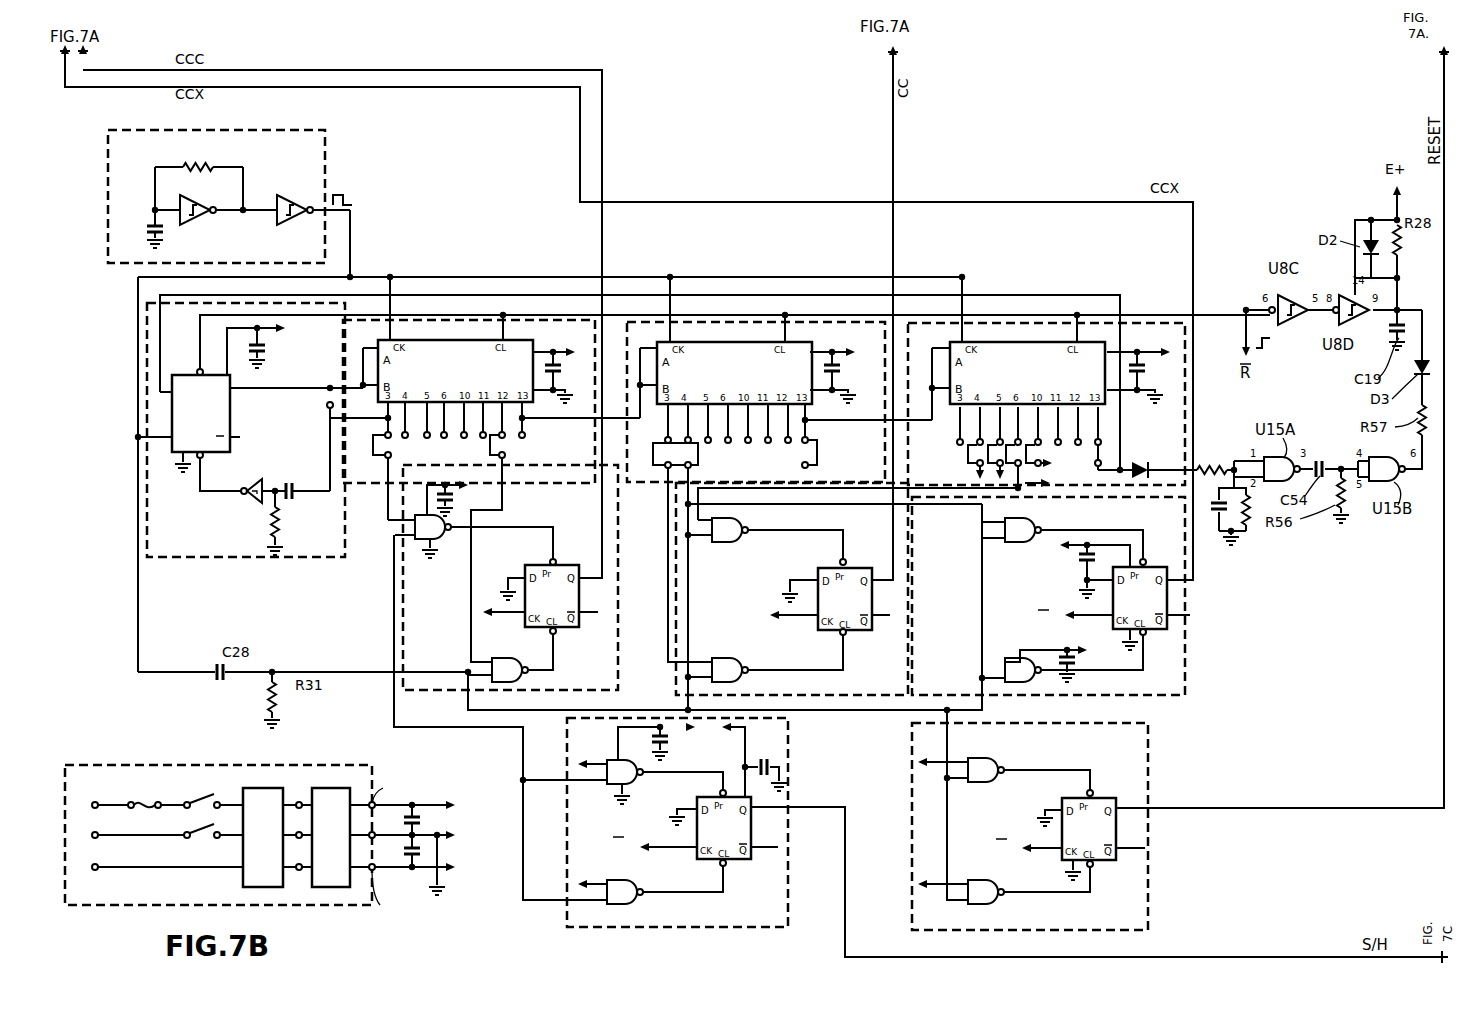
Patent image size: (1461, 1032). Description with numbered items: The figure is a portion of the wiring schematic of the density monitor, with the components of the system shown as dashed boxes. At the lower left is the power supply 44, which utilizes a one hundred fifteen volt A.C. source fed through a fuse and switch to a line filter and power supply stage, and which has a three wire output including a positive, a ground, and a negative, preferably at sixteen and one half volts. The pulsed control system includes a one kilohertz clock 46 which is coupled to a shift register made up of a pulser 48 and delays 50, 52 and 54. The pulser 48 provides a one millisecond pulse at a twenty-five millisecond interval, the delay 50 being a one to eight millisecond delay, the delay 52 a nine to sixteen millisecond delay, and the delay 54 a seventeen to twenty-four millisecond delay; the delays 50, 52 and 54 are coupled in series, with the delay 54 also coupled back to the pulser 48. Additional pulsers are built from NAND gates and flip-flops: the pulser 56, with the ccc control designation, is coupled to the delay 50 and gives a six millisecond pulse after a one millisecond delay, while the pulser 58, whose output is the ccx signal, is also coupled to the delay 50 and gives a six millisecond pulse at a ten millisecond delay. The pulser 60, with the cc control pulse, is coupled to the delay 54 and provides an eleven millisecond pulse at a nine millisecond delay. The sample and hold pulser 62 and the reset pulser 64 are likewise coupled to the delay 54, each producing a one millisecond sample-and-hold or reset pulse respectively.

The power supply 44 is at (340, 765).
The clock 46 is at (325, 132).
The pulser 48 is at (150, 560).
The delay 50 is at (432, 320).
The delay 52 is at (700, 320).
The delay 54 is at (1013, 323).
The pulser 56 is at (403, 625).
The pulser 58 is at (1185, 670).
The pulser 60 is at (882, 697).
The S/H pulser 62 is at (567, 905).
The reset pulser 64 is at (1148, 762).